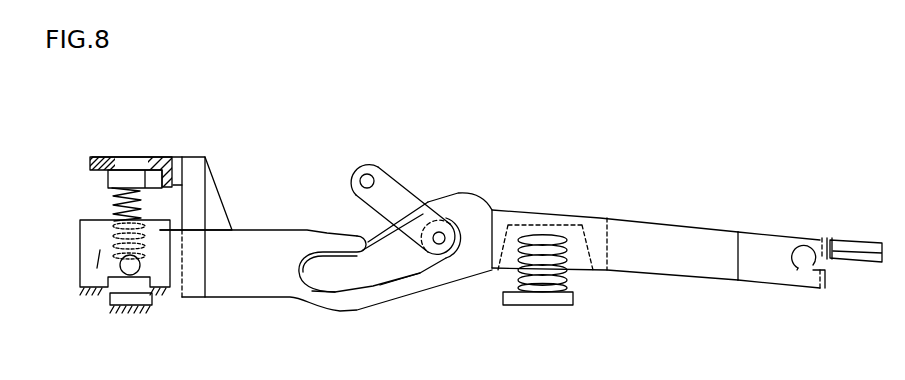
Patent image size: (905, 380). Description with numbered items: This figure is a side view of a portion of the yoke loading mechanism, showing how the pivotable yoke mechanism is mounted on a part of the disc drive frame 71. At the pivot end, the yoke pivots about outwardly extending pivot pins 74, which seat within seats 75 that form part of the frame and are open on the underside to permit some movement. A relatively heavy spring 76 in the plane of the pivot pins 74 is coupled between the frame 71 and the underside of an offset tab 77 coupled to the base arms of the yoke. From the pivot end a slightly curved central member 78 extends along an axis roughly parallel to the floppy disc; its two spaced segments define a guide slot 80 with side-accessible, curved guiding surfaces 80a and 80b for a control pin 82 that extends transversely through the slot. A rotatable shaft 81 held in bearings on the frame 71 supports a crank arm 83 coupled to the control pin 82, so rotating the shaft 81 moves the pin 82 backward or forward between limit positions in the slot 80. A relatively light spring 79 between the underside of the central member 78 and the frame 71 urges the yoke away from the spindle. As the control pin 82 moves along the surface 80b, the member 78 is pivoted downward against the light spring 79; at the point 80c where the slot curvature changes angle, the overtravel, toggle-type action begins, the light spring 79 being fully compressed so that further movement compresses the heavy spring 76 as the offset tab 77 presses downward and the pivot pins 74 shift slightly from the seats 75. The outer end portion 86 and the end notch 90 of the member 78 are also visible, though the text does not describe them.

The disc drive frame 71 is at (112, 300).
The pivot pins 74 is at (120, 263).
The seats 75 is at (90, 242).
The heavy spring 76 is at (112, 197).
The offset tab 77 is at (165, 157).
The central member 78 is at (443, 193).
The light spring 79 is at (520, 288).
The guide slot 80 is at (363, 243).
The guiding surface 80a is at (387, 245).
The guiding surface 80b is at (407, 270).
The point of curvature change 80c is at (340, 287).
The rotatable shaft 81 is at (367, 181).
The control pin 82 is at (462, 216).
The crank arm 83 is at (410, 198).
The lever extension 86 is at (681, 228).
The notch 90 is at (798, 265).